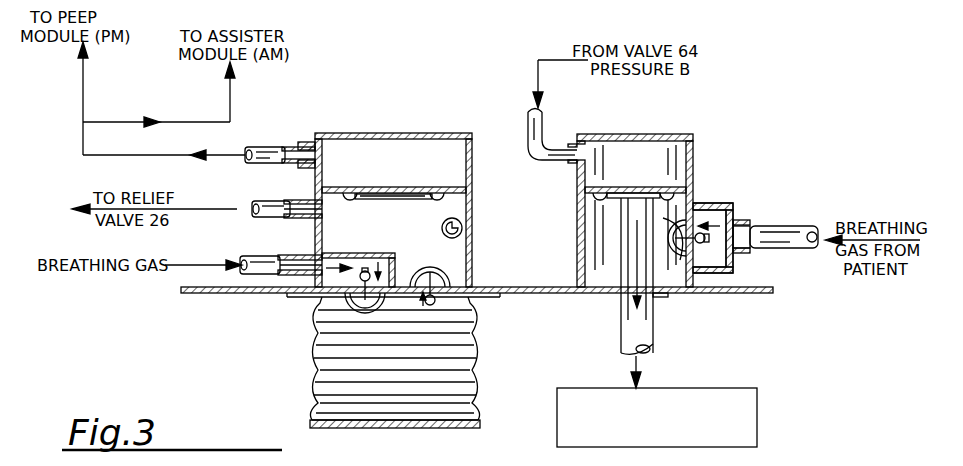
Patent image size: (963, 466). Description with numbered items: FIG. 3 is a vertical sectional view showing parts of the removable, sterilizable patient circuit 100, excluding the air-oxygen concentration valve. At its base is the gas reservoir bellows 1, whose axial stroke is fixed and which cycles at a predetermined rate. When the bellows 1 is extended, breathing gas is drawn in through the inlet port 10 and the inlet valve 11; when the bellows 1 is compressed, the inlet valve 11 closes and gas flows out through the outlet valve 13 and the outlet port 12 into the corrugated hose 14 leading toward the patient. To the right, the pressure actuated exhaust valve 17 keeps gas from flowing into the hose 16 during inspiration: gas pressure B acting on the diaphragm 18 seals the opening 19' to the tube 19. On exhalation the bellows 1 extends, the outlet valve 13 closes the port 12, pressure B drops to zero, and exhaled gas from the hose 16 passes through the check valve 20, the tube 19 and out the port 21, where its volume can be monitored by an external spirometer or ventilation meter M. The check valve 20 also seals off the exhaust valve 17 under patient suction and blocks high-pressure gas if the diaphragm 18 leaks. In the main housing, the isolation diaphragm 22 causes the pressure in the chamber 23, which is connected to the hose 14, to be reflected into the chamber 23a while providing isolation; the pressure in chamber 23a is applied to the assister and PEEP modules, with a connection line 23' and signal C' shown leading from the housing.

The gas reservoir bellows 1 is at (310, 377).
The inlet port 10 is at (317, 259).
The inlet valve 11 is at (350, 302).
The outlet port 12 is at (460, 228).
The outlet valve 13 is at (440, 275).
The corrugated hose 14 is at (462, 222).
The hose 16 is at (795, 232).
The pressure actuated exhaust valve 17 is at (708, 150).
The diaphragm 18 is at (632, 192).
The tube 19 is at (620, 238).
The opening 19' is at (607, 235).
The check valve 20 is at (666, 300).
The port 21 is at (628, 322).
The isolation diaphragm 22 is at (367, 193).
The chamber 23 is at (393, 210).
The control chamber pressure tube 23' is at (280, 129).
The chamber 23a is at (420, 175).
The patient circuit 100 is at (168, 343).
The spirometer or ventilation meter M is at (692, 388).
The pressure signal line C' is at (157, 170).